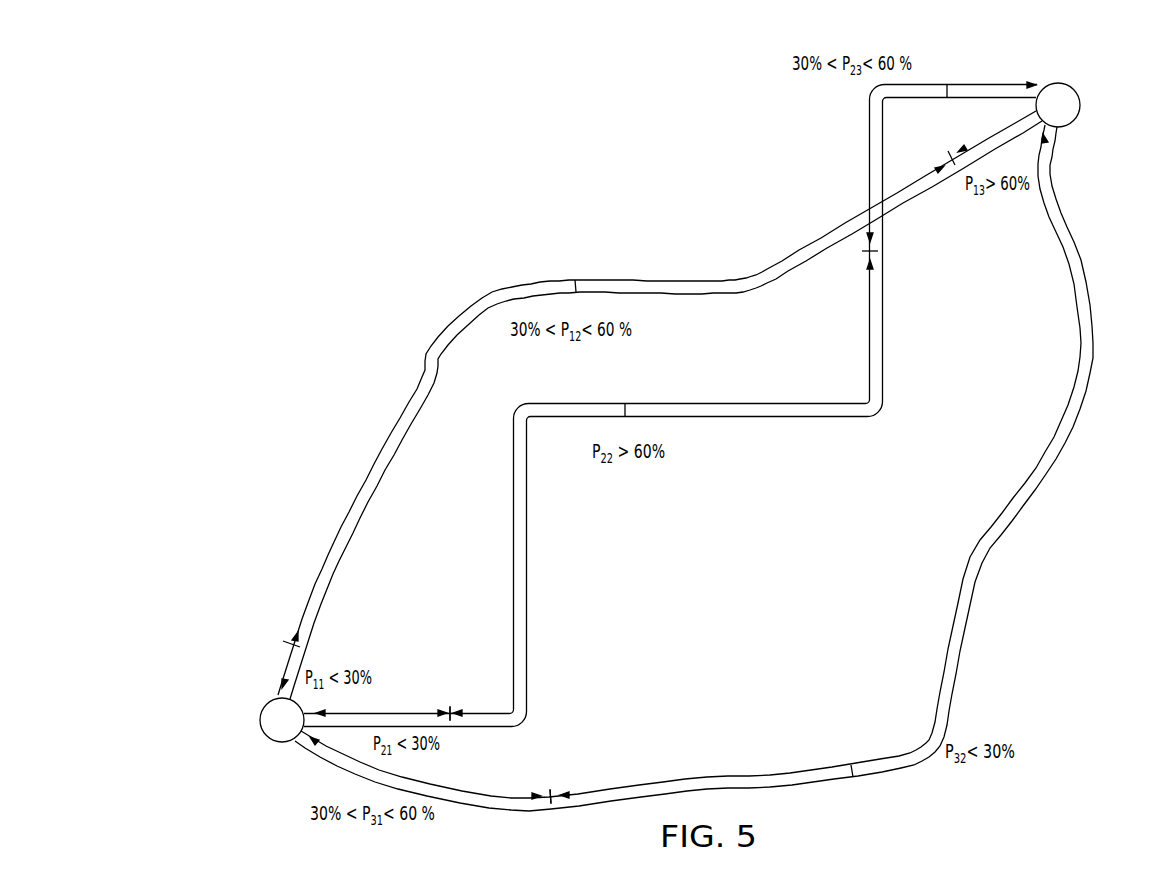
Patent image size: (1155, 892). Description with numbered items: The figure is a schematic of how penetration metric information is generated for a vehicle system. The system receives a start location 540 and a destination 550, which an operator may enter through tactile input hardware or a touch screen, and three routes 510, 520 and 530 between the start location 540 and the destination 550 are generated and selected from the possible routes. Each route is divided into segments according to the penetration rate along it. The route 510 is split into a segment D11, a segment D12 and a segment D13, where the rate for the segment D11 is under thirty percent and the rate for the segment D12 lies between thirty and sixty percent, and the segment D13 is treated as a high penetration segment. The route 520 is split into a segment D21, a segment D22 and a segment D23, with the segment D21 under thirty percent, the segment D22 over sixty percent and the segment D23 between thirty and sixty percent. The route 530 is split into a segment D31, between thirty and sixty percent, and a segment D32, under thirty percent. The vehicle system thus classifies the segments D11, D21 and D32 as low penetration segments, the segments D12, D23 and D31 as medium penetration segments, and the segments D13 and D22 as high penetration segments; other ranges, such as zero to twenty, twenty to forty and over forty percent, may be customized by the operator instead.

The route 510 is at (393, 468).
The route 520 is at (707, 453).
The route 530 is at (1027, 572).
The start location 540 is at (262, 724).
The destination 550 is at (1080, 101).
The segment D11 is at (288, 662).
The segment D12 is at (582, 280).
The segment D13 is at (960, 157).
The segment D21 is at (397, 712).
The segment D22 is at (627, 403).
The segment D23 is at (948, 85).
The segment D31 is at (492, 797).
The segment D32 is at (852, 767).